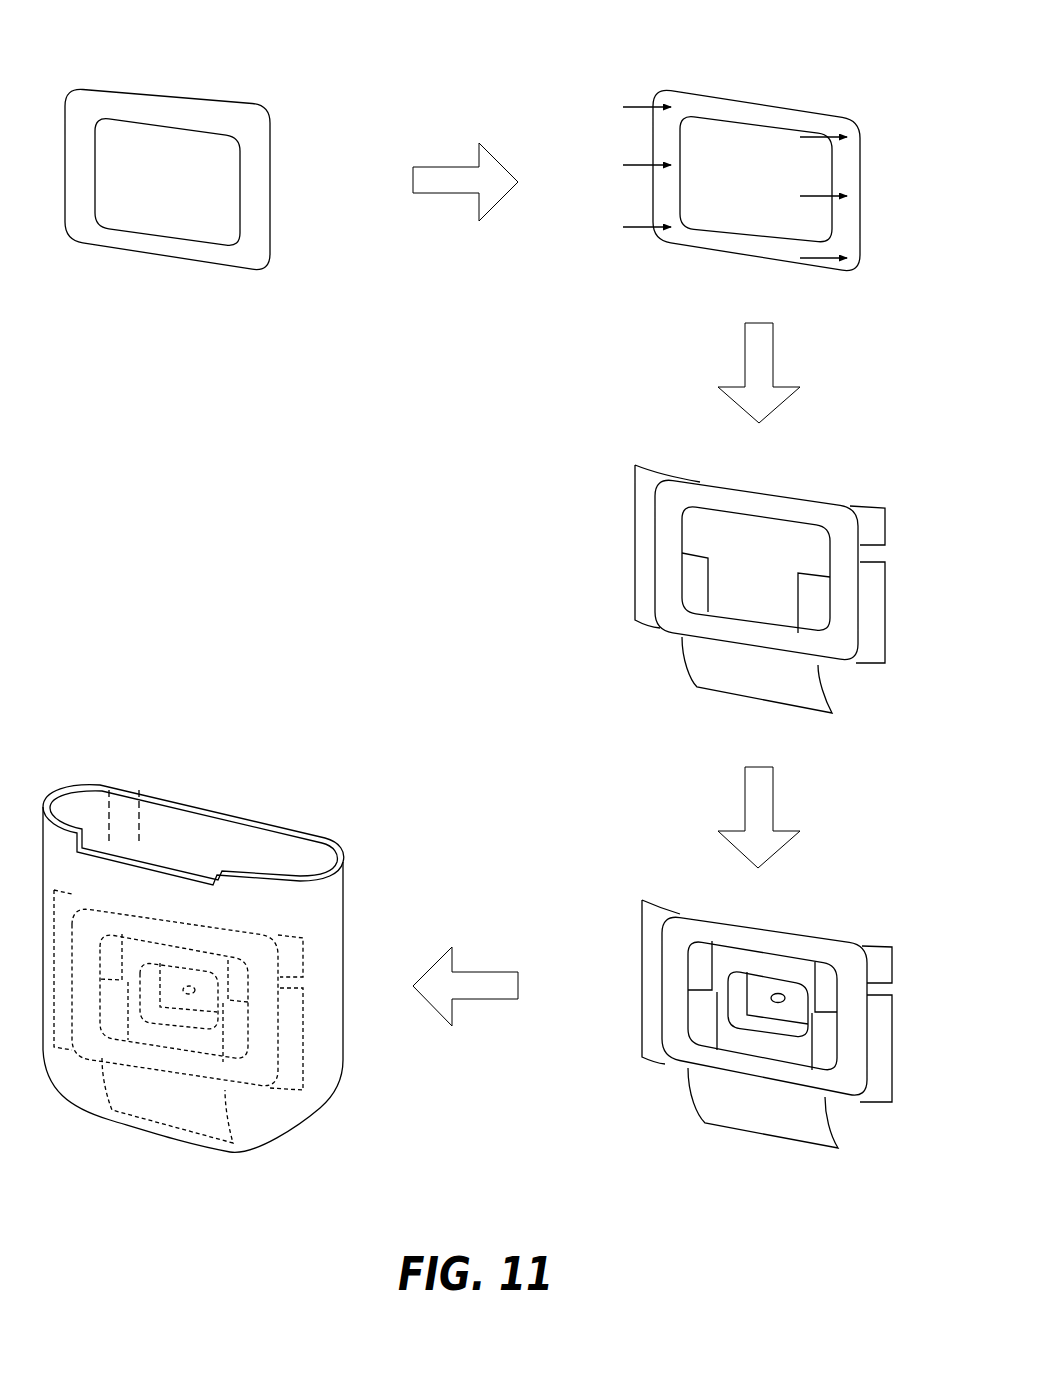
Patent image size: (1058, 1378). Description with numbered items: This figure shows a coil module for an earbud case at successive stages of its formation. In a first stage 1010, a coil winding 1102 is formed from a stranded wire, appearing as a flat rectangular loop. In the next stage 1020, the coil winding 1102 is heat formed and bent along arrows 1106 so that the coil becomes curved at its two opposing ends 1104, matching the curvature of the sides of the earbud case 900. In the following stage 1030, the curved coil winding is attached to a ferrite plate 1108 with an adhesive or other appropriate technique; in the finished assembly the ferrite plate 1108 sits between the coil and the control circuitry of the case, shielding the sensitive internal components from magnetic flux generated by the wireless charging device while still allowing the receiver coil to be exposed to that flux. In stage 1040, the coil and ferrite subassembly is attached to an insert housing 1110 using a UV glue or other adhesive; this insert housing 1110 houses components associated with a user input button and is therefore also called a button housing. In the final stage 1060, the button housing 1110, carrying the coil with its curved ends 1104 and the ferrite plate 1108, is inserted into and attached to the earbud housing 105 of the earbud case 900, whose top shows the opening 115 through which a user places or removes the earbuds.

The coil winding forming step 1010 is at (168, 70).
The heat forming step 1020 is at (787, 73).
The ferrite plate attaching step 1030 is at (678, 447).
The insert housing attaching step 1040 is at (695, 880).
The button housing insertion step 1060 is at (197, 720).
The coil winding 1102 is at (268, 126).
The opposing ends of the coil 1104 is at (854, 162).
The arrows 1106 is at (708, 176).
The ferrite plate 1108 is at (880, 603).
The insert housing 1110 is at (762, 958).
The earbud case 900 is at (228, 950).
The housing 105 is at (343, 920).
The opening 115 is at (212, 847).